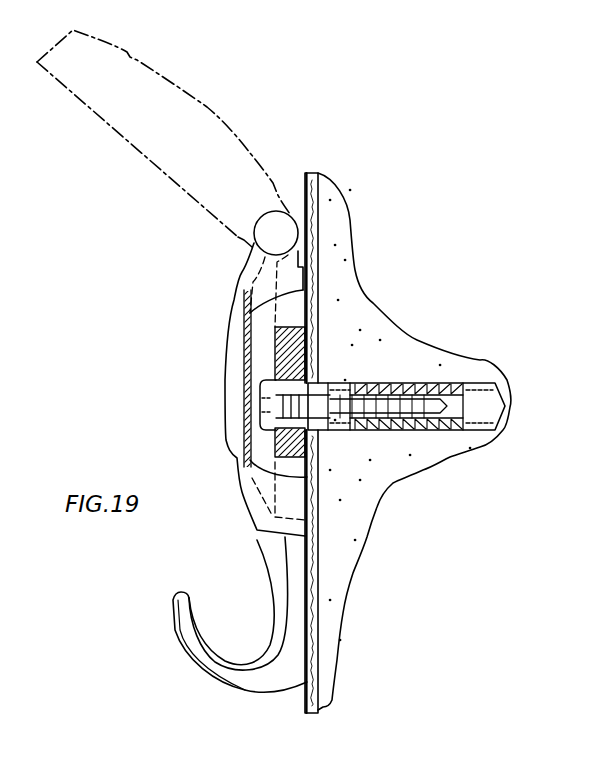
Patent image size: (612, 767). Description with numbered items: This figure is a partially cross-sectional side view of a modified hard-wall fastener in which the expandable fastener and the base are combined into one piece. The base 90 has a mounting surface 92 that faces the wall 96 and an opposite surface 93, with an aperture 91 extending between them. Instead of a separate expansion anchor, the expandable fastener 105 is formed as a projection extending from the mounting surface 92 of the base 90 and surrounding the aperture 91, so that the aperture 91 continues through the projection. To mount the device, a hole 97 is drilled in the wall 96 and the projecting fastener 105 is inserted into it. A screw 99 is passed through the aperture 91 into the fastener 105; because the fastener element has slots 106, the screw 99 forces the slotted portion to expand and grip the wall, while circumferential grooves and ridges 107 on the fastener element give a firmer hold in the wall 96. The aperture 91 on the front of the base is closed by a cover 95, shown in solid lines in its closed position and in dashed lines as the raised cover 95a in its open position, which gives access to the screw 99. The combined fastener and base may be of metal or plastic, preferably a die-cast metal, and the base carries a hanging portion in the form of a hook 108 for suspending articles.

The base 90 is at (313, 333).
The aperture 91 is at (277, 450).
The mounting surface 92 is at (292, 305).
The surface opposite the mounting surface 93 is at (275, 350).
The cover 95 is at (233, 280).
The cover in open position 95a is at (210, 123).
The wall 96 is at (350, 547).
The hole 97 is at (477, 417).
The screw 99 is at (263, 425).
The expandable fastener 105 is at (397, 385).
The slots 106 is at (455, 420).
The circumferential grooves and ridges 107 is at (418, 388).
The hook 108 is at (170, 632).